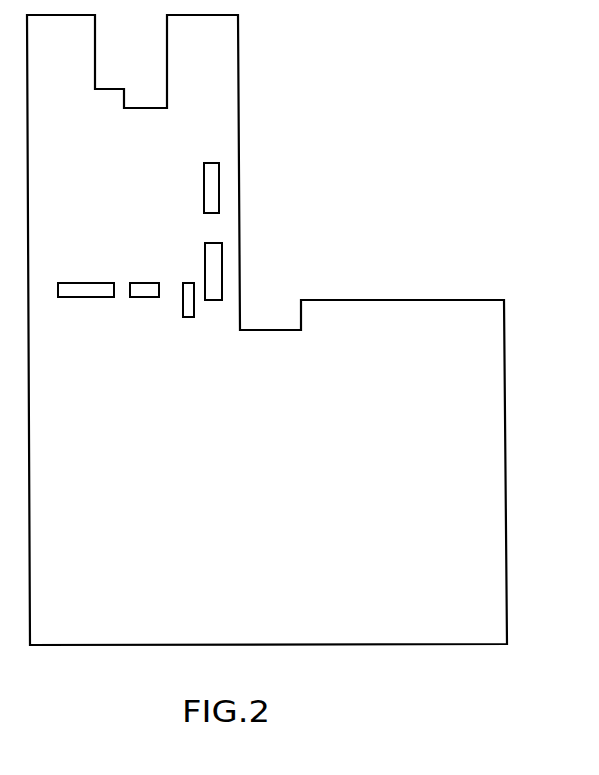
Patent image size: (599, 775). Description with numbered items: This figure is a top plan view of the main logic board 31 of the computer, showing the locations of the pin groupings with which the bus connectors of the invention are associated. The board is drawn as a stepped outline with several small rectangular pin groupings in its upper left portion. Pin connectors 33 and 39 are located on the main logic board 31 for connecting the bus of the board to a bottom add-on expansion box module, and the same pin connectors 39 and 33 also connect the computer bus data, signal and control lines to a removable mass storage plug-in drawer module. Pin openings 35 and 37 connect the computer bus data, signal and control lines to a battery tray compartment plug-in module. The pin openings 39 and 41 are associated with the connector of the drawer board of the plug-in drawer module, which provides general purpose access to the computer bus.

The main logic board 31 is at (499, 394).
The pin connector 33 is at (210, 190).
The pin opening 35 is at (87, 288).
The pin opening 37 is at (150, 283).
The pin connector 39 is at (209, 253).
The pin opening 41 is at (188, 308).